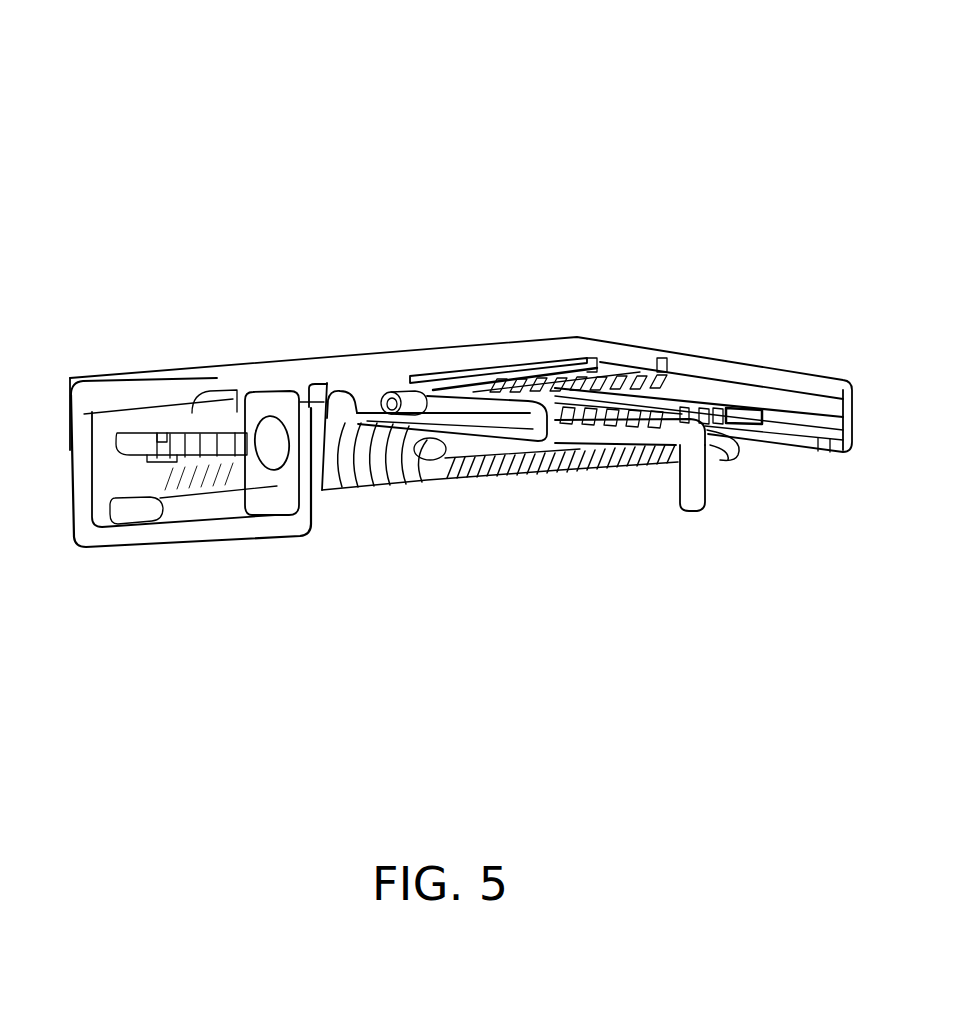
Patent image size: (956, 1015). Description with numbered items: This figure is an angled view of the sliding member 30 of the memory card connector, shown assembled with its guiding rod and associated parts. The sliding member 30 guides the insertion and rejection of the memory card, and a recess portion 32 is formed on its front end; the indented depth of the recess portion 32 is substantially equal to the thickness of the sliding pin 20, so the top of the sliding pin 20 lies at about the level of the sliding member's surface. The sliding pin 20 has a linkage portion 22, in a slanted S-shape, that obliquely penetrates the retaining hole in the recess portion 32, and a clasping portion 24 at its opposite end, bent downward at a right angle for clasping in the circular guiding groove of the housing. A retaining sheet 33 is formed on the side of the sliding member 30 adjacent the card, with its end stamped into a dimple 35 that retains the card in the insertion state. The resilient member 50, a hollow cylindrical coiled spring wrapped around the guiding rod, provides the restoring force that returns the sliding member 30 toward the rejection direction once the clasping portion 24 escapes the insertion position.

The sliding pin 20 is at (568, 443).
The linkage portion 22 is at (428, 443).
The clasping portion 24 is at (693, 482).
The sliding member 30 is at (377, 365).
The recess portion 32 is at (473, 395).
The retaining sheet 33 is at (173, 487).
The dimple 35 is at (273, 452).
The resilient member 50 is at (380, 457).